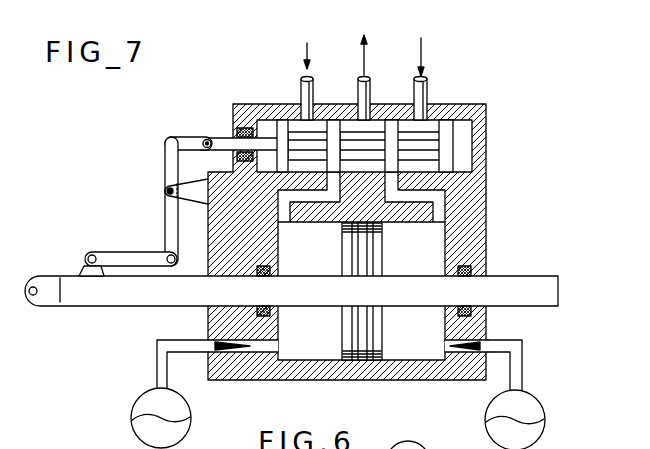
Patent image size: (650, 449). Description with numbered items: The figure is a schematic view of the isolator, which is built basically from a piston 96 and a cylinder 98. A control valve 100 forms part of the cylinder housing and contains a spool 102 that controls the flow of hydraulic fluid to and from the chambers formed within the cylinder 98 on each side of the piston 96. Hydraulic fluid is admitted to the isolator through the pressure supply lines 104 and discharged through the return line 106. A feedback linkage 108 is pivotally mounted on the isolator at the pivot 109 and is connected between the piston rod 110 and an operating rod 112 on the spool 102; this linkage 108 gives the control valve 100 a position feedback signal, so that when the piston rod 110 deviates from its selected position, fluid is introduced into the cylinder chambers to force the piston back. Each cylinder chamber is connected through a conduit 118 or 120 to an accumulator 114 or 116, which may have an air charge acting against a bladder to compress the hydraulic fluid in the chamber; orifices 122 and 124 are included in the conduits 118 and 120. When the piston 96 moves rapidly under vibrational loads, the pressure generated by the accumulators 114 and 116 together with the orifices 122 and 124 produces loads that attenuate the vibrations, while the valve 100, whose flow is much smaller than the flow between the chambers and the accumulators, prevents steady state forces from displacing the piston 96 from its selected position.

The piston 96 is at (370, 255).
The cylinder 98 is at (480, 193).
The control valve 100 is at (257, 80).
The spool 102 is at (443, 144).
The pressure supply lines 104 is at (300, 81).
The return line 106 is at (358, 86).
The feedback linkage 108 is at (167, 223).
The pivot 109 is at (167, 190).
The piston rod 110 is at (68, 275).
The operating rod 112 is at (222, 140).
The accumulator 114 is at (146, 394).
The accumulator 116 is at (541, 406).
The conduit 118 is at (150, 345).
The conduit 120 is at (507, 342).
The orifice 122 is at (238, 352).
The orifice 124 is at (457, 343).